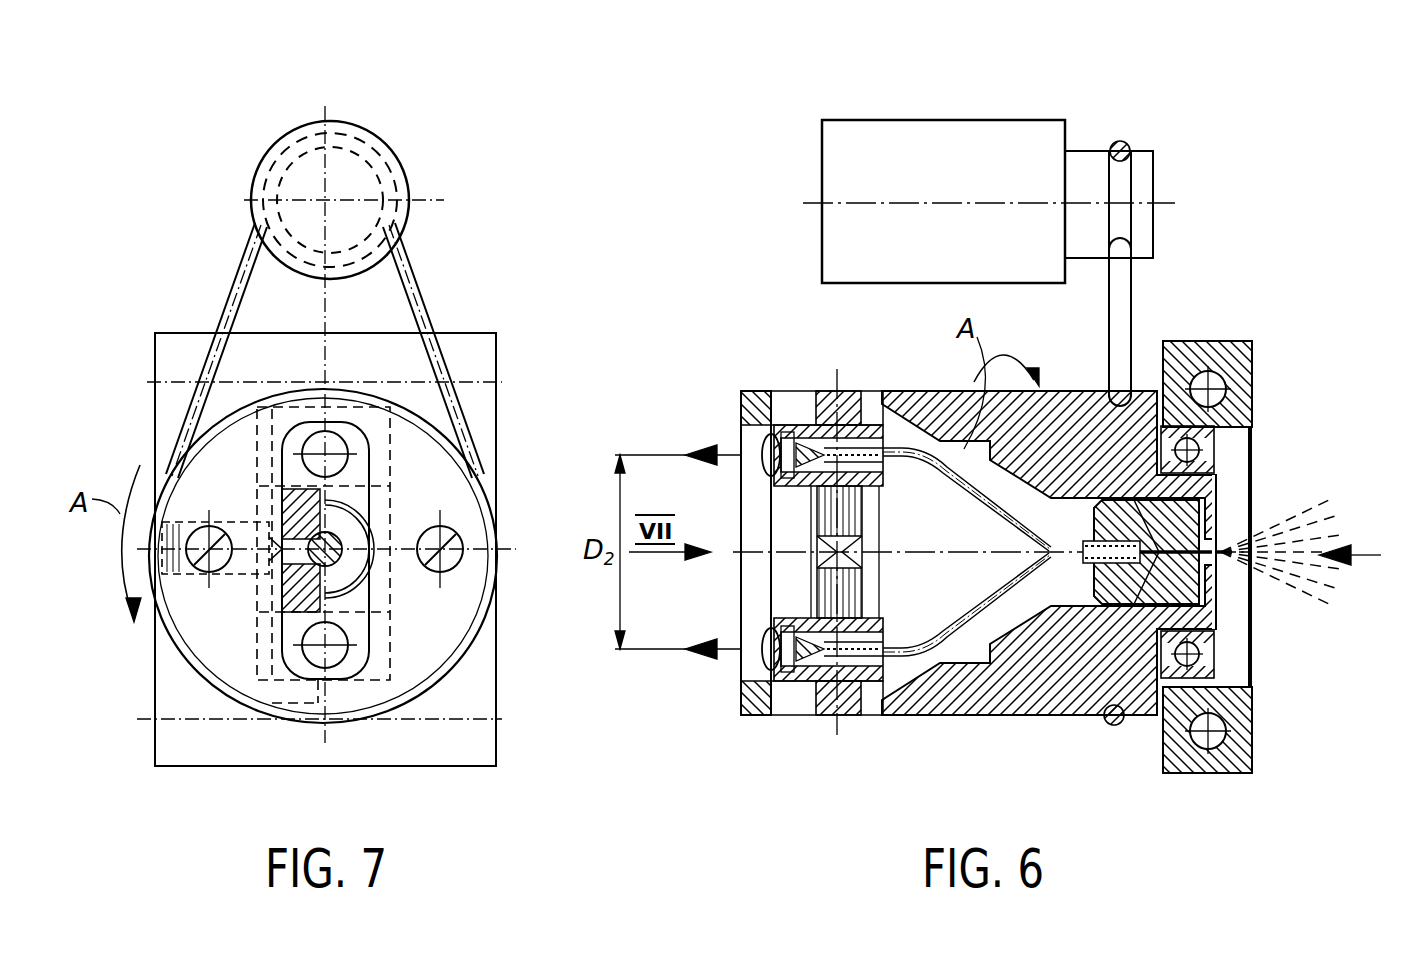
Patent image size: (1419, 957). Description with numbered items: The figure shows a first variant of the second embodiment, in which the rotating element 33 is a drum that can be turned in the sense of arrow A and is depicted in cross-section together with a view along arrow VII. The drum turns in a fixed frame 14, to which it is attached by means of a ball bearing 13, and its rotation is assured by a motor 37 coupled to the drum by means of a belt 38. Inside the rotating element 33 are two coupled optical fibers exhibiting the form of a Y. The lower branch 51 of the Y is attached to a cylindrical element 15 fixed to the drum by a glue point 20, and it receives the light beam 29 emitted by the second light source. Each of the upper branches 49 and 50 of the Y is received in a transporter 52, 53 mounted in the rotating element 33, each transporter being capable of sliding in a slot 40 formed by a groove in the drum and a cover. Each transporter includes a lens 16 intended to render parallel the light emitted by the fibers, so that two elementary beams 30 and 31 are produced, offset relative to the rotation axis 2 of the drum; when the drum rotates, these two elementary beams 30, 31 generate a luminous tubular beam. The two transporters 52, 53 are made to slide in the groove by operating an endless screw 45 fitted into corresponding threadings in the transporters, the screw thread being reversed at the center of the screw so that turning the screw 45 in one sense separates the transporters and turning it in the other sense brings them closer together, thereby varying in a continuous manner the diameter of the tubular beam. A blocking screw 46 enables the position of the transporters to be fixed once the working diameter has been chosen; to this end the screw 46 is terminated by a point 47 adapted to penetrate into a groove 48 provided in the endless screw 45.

In FIG. 6, the rotation axis 2 is at (1361, 555).
In FIG. 6, the ball bearing 13 is at (1194, 454).
In FIG. 6, the fixed frame 14 is at (1250, 342).
In FIG. 6, the cylindrical element 15 is at (1211, 511).
In FIG. 7, the lens 16 is at (337, 434).
In FIG. 6, the lens 16 is at (769, 446).
In FIG. 6, the glue point 20 is at (1094, 540).
In FIG. 6, the light beam 29 is at (1317, 600).
In FIG. 6, the elementary beam 30 is at (669, 647).
In FIG. 6, the elementary beam 31 is at (687, 456).
In FIG. 6, the rotating element 33 is at (932, 387).
In FIG. 7, the motor 37 is at (384, 154).
In FIG. 6, the motor 37 is at (947, 144).
In FIG. 7, the belt 38 is at (414, 284).
In FIG. 6, the belt 38 is at (1124, 300).
In FIG. 7, the slot 40 is at (379, 574).
In FIG. 6, the slot 40 is at (874, 563).
In FIG. 7, the endless screw 45 is at (272, 388).
In FIG. 6, the endless screw 45 is at (829, 392).
In FIG. 7, the blocking screw 46 is at (259, 530).
In FIG. 7, the point 47 is at (259, 551).
In FIG. 7, the groove 48 is at (330, 534).
In FIG. 6, the groove 48 is at (859, 552).
In FIG. 6, the upper branch 49 is at (952, 479).
In FIG. 6, the upper branch 50 is at (949, 631).
In FIG. 6, the lower branch 51 is at (1089, 565).
In FIG. 6, the transporter 52 is at (872, 392).
In FIG. 6, the transporter 53 is at (871, 716).